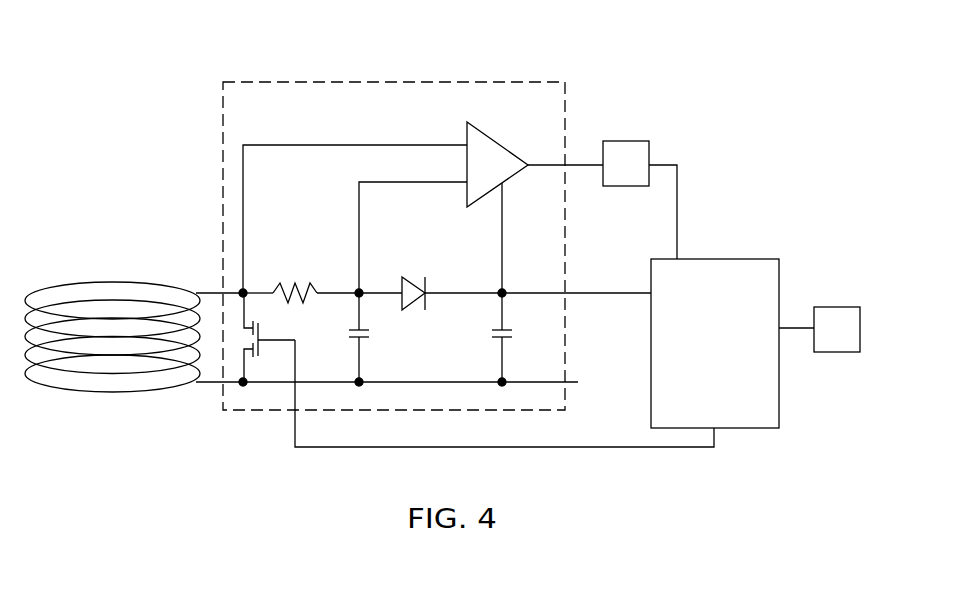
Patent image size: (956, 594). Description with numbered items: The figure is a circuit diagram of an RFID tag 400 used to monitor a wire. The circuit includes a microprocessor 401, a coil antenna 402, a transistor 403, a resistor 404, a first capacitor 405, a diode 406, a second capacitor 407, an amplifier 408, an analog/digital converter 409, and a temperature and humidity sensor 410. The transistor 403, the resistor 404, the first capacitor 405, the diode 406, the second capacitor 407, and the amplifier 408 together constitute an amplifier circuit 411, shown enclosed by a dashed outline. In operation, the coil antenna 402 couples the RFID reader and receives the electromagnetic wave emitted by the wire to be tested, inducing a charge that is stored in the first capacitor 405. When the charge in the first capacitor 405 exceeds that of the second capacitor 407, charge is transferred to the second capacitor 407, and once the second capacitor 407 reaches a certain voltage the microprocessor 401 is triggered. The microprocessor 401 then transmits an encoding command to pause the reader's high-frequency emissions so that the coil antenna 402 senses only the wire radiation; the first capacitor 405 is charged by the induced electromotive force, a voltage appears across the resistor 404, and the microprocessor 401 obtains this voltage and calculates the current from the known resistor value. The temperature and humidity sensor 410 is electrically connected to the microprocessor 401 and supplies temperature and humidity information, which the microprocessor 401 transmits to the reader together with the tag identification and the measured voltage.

The RFID tag 400 is at (481, 470).
The microprocessor 401 is at (748, 259).
The coil antenna 402 is at (133, 283).
The transistor 403 is at (263, 325).
The resistor 404 is at (293, 283).
The first capacitor 405 is at (366, 341).
The diode 406 is at (405, 277).
The second capacitor 407 is at (509, 341).
The amplifier 408 is at (508, 152).
The analog/digital converter 409 is at (646, 140).
The temperature and humidity sensor 410 is at (843, 307).
The amplifier circuit 411 is at (567, 105).